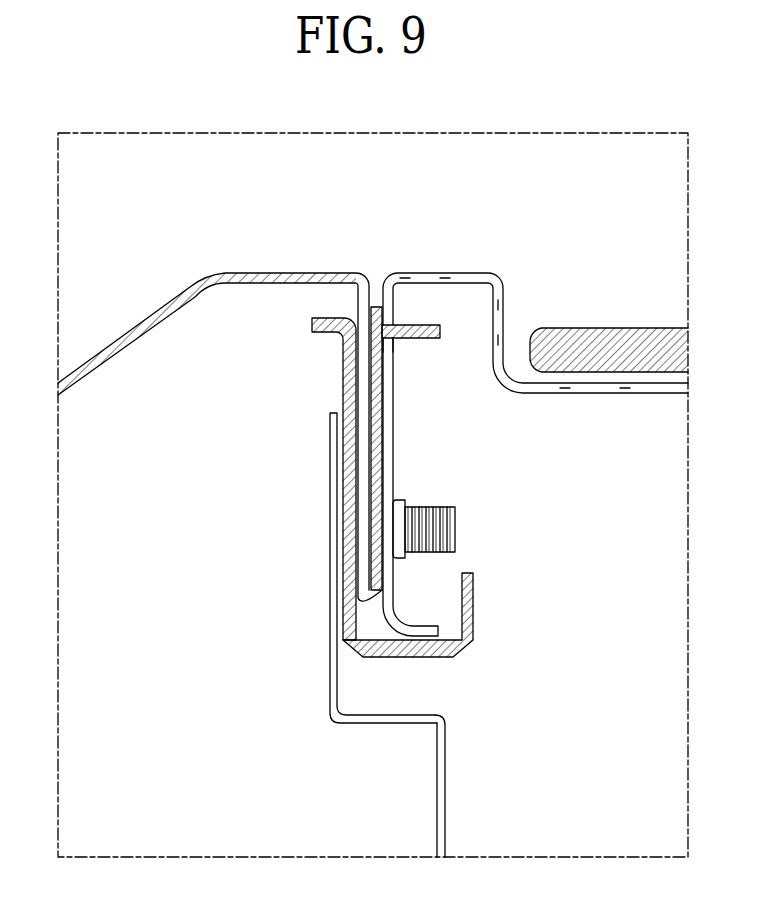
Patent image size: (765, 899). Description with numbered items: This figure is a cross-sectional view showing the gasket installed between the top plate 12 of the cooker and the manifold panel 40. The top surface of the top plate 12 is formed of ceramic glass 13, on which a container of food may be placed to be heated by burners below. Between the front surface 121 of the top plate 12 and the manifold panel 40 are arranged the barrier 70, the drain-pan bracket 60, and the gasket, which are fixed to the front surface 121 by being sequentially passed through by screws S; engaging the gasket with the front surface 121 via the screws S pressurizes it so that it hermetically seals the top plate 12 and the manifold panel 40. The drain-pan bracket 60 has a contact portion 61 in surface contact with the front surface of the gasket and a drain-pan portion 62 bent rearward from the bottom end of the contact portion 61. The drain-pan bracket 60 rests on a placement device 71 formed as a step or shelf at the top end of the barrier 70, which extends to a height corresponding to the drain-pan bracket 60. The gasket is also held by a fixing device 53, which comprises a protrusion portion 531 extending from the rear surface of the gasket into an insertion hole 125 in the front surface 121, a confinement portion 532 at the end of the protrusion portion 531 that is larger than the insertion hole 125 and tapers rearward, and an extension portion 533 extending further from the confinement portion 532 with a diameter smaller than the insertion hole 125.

The manifold panel 40 is at (166, 288).
The top plate 12 is at (535, 418).
The front surface of the top plate 121 is at (394, 468).
The insertion hole 125 is at (394, 355).
The ceramic glass 13 is at (583, 327).
The fixing device 53 is at (428, 368).
The protrusion portion 531 is at (385, 314).
The confinement portion 532 is at (412, 322).
The extension portion 533 is at (434, 324).
The screw S is at (456, 526).
The drain-pan bracket 60 is at (324, 487).
The contact portion 61 is at (347, 558).
The drain-pan portion 62 is at (377, 634).
The barrier 70 is at (393, 635).
The placement device 71 is at (330, 681).